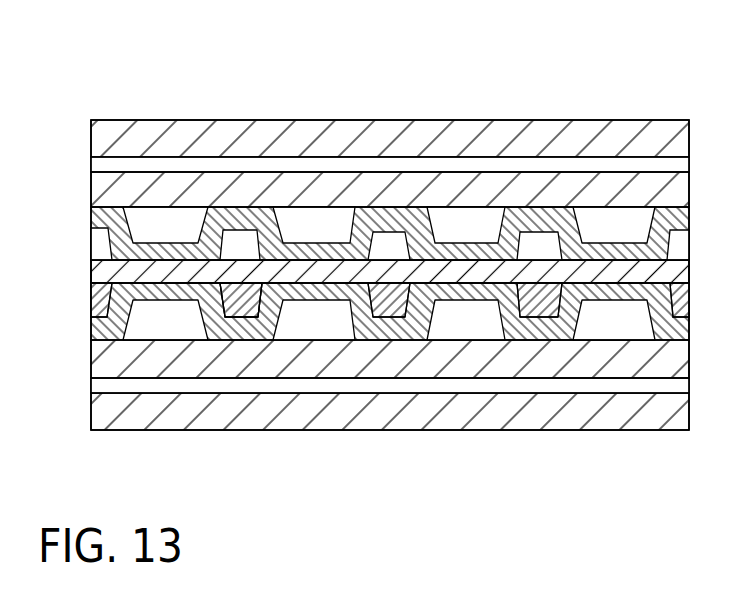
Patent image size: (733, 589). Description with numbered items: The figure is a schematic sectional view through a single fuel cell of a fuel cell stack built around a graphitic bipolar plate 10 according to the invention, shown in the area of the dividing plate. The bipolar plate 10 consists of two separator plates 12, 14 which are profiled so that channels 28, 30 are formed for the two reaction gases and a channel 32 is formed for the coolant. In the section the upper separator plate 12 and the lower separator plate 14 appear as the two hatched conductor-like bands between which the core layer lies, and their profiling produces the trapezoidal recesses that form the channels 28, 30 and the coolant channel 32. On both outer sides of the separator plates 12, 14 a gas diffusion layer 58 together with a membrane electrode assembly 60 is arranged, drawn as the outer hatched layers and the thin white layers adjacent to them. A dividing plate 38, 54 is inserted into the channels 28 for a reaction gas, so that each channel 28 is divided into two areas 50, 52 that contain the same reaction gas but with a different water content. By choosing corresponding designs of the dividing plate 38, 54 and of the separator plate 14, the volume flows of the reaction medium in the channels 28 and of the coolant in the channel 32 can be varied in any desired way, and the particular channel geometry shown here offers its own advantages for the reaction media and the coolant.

The bipolar plate 10 is at (518, 80).
The separator plate 12 is at (454, 253).
The separator plate 14 is at (544, 329).
The channel 28 is at (248, 307).
The channel 30 is at (177, 218).
The channel 32 is at (240, 244).
The dividing plate 38 is at (444, 272).
The dividing plate 54 is at (444, 272).
The area 50 is at (168, 321).
The area 52 is at (232, 307).
The gas diffusion layer 58 is at (610, 148).
The membrane electrode assembly 60 is at (654, 165).